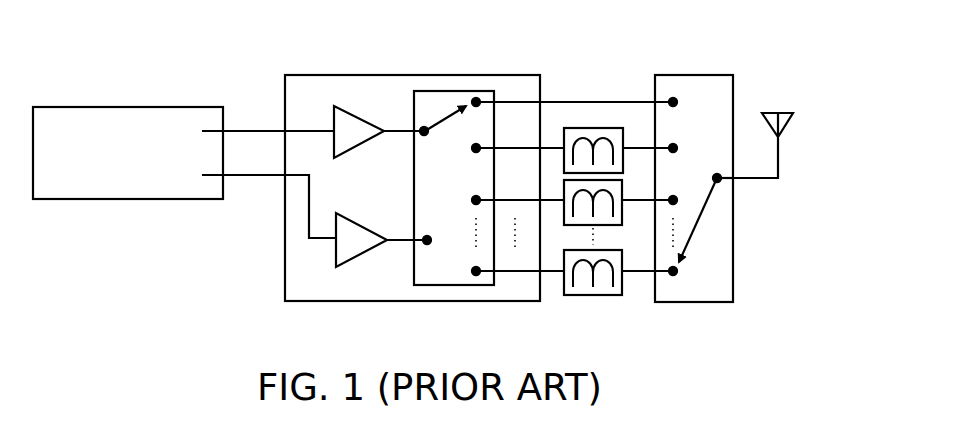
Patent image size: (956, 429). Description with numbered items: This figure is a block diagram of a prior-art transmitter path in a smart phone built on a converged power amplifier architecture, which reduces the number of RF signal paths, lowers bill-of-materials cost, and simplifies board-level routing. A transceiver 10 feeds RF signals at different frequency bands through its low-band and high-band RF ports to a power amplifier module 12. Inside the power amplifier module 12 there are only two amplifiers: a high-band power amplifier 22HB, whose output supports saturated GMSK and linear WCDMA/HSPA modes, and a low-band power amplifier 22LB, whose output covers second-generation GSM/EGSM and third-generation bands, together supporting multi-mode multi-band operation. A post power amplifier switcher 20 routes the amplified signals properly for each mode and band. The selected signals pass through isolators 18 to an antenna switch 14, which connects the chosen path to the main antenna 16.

The transceiver 10 is at (99, 107).
The power amplifier module 12 is at (410, 75).
The antenna switch 14 is at (688, 75).
The main antenna 16 is at (778, 155).
The isolators 18 is at (585, 295).
The post power amplifier switcher 20 is at (462, 91).
The low-band power amplifier 22LB is at (352, 115).
The high-band power amplifier 22HB is at (352, 221).